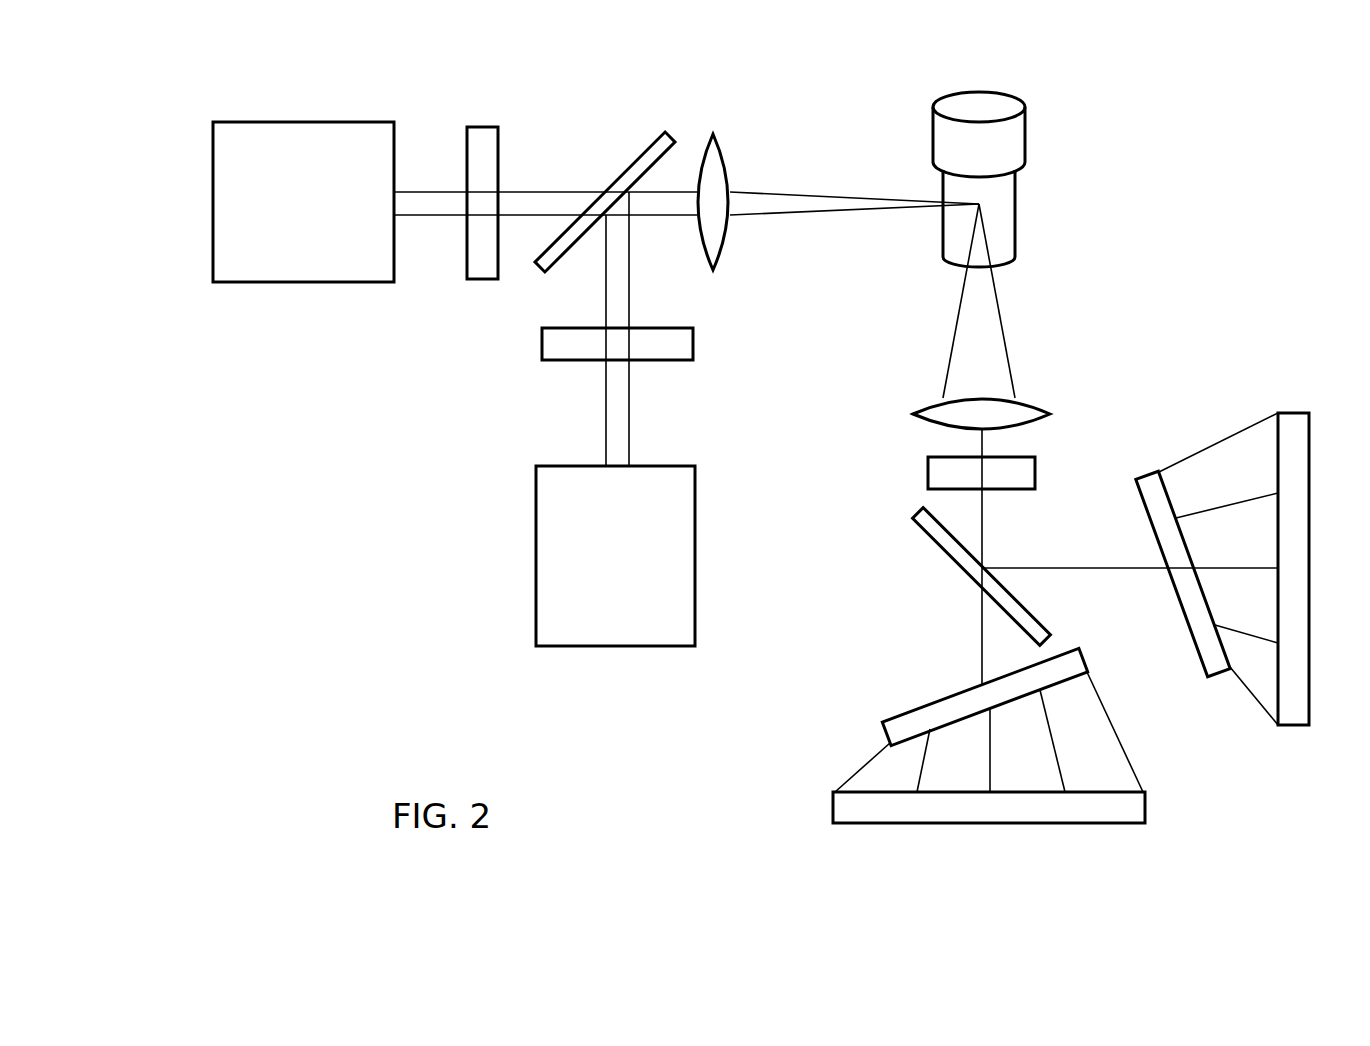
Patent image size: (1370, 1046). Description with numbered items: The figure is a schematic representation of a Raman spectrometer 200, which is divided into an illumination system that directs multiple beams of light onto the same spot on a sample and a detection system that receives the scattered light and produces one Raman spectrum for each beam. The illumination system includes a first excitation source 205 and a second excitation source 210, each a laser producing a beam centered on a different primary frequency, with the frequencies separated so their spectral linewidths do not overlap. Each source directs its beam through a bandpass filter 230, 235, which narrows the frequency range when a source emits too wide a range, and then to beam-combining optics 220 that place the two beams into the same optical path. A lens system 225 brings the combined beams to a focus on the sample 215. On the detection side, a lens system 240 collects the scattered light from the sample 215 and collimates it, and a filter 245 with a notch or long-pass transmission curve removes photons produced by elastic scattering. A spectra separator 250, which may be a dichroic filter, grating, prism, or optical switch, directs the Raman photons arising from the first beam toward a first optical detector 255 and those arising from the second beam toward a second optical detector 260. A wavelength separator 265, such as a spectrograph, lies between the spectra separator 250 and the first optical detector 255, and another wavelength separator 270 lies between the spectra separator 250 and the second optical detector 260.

The Raman spectrometer 200 is at (1172, 77).
The first excitation source 205 is at (350, 122).
The second excitation source 210 is at (536, 510).
The sample 215 is at (933, 140).
The beam-combining optics 220 is at (636, 156).
The lens system 225 is at (712, 134).
The bandpass filter 230 is at (485, 127).
The bandpass filter 235 is at (542, 345).
The lens system 240 is at (913, 414).
The filter 245 is at (928, 470).
The spectra separator 250 is at (917, 521).
The first optical detector 255 is at (833, 798).
The second optical detector 260 is at (1287, 413).
The wavelength separator 265 is at (882, 722).
The wavelength separator 270 is at (1150, 479).